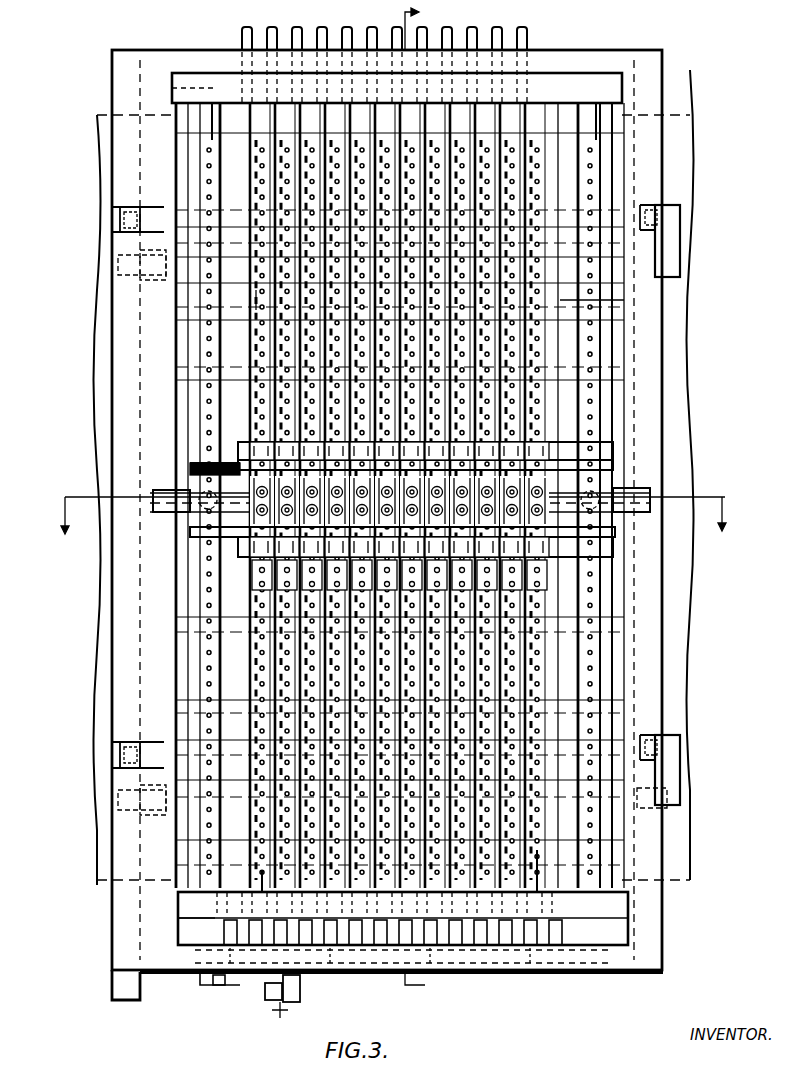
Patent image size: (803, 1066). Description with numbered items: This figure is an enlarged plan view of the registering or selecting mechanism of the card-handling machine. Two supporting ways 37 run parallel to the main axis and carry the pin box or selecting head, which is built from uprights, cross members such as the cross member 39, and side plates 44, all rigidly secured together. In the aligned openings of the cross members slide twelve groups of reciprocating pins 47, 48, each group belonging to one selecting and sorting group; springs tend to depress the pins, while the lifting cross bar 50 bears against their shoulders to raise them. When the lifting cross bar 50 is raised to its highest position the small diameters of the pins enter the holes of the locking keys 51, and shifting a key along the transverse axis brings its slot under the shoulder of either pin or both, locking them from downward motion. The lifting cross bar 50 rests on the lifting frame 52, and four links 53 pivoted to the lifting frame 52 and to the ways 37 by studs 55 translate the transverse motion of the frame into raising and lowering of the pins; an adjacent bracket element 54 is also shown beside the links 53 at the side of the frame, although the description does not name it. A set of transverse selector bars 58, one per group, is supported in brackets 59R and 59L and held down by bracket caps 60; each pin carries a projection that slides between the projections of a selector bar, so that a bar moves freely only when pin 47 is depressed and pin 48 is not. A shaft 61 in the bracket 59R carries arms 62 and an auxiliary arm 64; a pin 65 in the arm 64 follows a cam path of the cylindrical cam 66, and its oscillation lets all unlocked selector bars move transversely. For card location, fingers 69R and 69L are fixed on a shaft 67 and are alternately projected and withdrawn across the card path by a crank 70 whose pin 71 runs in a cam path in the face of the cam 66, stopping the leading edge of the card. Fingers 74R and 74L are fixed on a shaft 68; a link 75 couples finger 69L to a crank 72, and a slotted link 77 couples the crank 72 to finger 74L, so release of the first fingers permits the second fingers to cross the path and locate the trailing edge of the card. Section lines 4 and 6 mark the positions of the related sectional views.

The section line 4— 4 is at (391, 525).
The section line 6— 6 is at (428, 500).
The supporting ways 37 is at (212, 114).
The cross member 39 is at (566, 517).
The side plates 44 is at (600, 466).
The reciprocating pin 47 is at (246, 500).
The reciprocating pin 48 is at (240, 492).
The lifting cross bar 50 is at (200, 506).
The locking keys 51 is at (330, 548).
The lifting frame 52 is at (112, 70).
The links 53 is at (118, 212).
The flange 54 is at (680, 212).
The studs 55 is at (118, 266).
The selector bars 58 is at (400, 13).
The bracket 59L is at (193, 90).
The bracket 59R is at (196, 908).
The bracket caps 60 is at (560, 88).
The shaft 61 is at (490, 942).
The arms 62 is at (216, 935).
The auxiliary arm 64 is at (300, 982).
The pin 65 is at (268, 992).
The cylindrical cam 66 is at (291, 1017).
The shaft 67 is at (262, 885).
The shaft 68 is at (540, 856).
The finger 69L is at (176, 297).
The finger 69R is at (176, 693).
The crank 70 is at (228, 988).
The pin 71 is at (214, 982).
The crank 72 is at (292, 268).
The finger 74L is at (612, 283).
The finger 74R is at (612, 700).
The link 75 is at (258, 300).
The link 77 is at (572, 302).